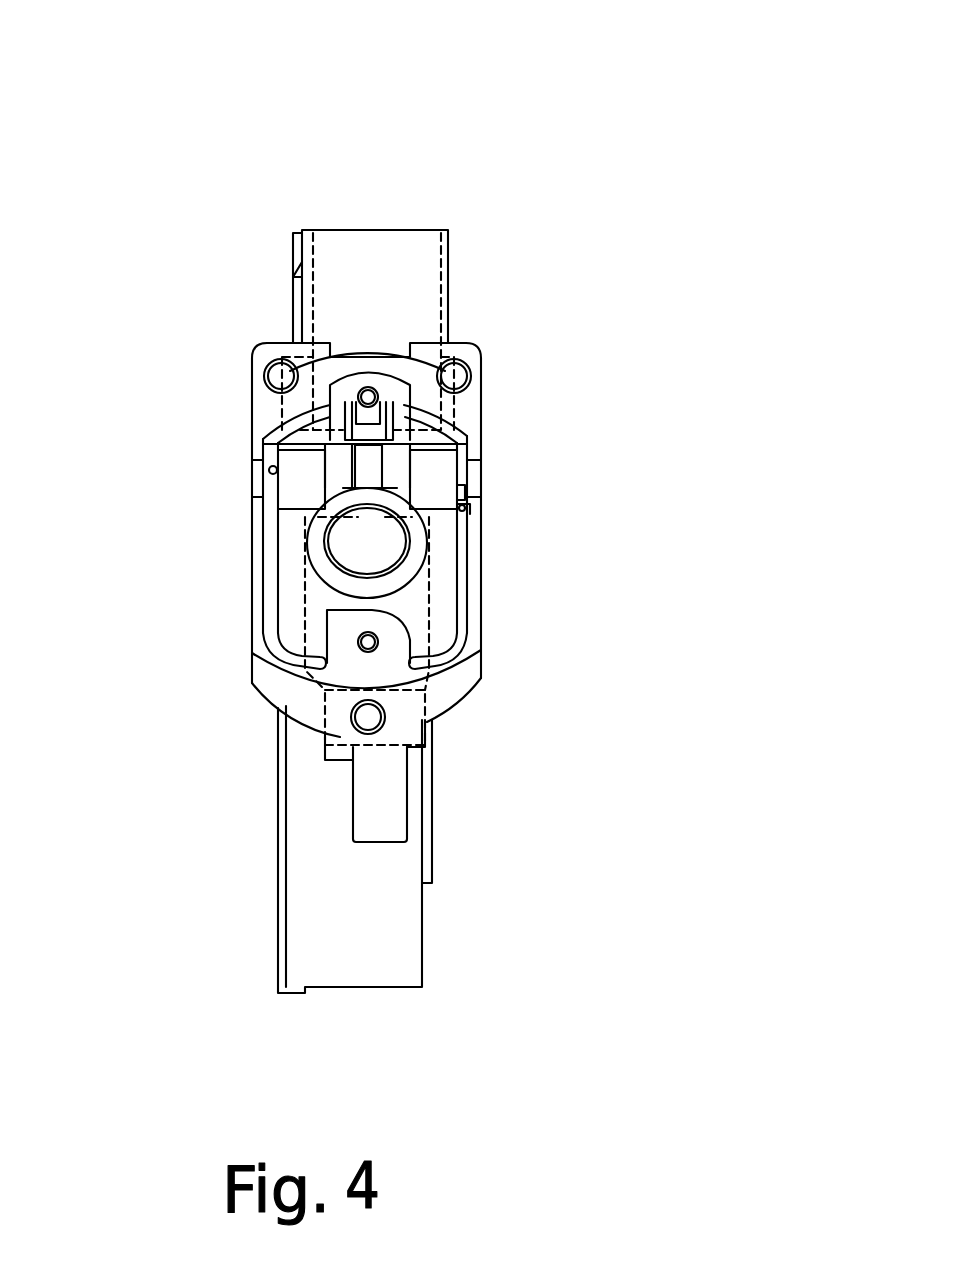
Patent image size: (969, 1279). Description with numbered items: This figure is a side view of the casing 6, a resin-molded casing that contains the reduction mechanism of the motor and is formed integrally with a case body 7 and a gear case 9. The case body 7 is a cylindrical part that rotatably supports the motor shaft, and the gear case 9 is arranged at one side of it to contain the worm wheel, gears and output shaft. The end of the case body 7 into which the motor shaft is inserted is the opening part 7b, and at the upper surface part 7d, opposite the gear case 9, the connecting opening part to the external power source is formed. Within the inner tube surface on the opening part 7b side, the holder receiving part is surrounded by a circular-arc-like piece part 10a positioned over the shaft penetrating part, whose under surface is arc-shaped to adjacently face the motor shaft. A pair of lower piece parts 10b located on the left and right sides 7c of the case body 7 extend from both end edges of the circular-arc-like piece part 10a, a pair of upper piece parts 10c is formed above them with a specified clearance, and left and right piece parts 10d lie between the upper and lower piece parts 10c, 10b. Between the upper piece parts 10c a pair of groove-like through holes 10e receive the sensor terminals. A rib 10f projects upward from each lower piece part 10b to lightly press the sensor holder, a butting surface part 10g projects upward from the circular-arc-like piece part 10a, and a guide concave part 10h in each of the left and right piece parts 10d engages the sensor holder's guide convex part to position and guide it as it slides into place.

The casing 6 is at (542, 87).
The case body 7 is at (508, 320).
The opening part 7b is at (447, 620).
The left and right sides 7c is at (260, 597).
The upper surface part 7d is at (253, 418).
The gear case 9 is at (377, 913).
The circular-arc-like piece part 10a is at (395, 485).
The lower piece parts 10b is at (300, 518).
The upper piece parts 10c is at (280, 432).
The left and right piece parts 10d is at (260, 482).
The through holes 10e is at (348, 392).
The rib 10f is at (460, 509).
The butting surface part 10g is at (455, 443).
The guide concave part 10h is at (270, 461).